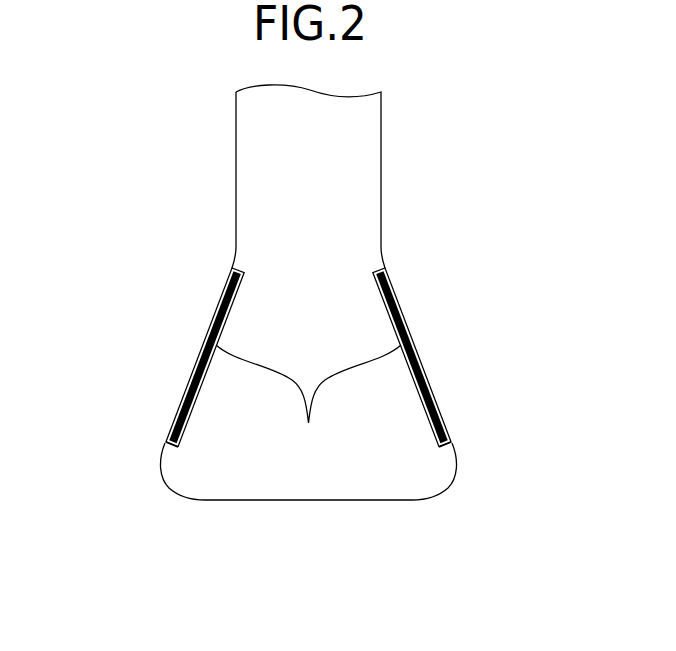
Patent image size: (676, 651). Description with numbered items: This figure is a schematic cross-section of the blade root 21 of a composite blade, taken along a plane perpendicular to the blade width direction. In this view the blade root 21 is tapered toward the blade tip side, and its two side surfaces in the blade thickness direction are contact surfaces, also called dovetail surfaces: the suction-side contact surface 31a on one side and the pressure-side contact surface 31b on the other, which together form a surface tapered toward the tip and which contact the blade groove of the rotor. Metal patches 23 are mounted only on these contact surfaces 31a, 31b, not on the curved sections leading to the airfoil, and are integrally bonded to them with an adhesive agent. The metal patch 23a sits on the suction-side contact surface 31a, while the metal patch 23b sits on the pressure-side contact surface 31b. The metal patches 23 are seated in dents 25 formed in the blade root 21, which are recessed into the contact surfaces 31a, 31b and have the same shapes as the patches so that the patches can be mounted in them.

The blade root 21 is at (307, 500).
The metal patches 23 is at (304, 357).
The metal patch 23a is at (215, 312).
The metal patch 23b is at (402, 306).
The dents 25 is at (308, 400).
The suction-side contact surface 31a is at (165, 441).
The pressure-side contact surface 31b is at (453, 441).